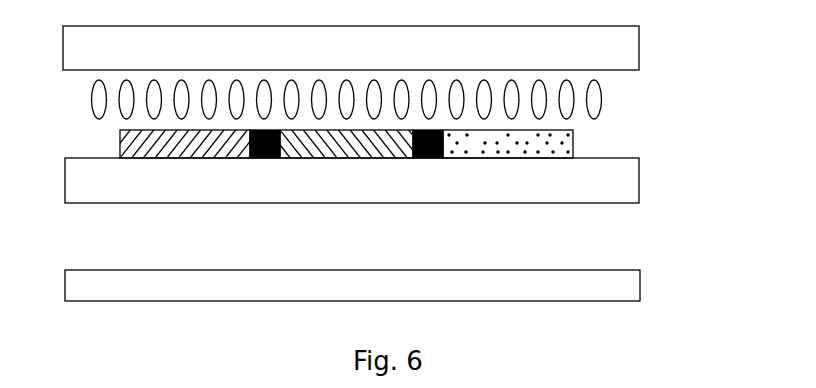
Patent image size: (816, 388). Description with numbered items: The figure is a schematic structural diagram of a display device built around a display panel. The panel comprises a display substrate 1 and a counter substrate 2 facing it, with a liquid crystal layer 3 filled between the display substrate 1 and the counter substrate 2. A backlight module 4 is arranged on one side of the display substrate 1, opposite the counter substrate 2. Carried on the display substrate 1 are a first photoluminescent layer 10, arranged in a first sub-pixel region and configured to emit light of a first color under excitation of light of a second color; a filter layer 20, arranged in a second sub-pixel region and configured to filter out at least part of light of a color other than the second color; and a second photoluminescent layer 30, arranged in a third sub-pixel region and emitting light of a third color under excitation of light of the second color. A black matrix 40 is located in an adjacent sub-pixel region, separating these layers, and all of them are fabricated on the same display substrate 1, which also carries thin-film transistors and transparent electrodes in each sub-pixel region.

The display substrate 1 is at (640, 123).
The counter substrate 2 is at (600, 44).
The liquid crystal layer 3 is at (602, 98).
The backlight module 4 is at (600, 284).
The first photoluminescent layer 10 is at (200, 145).
The filter layer 20 is at (488, 158).
The second photoluminescent layer 30 is at (352, 145).
The black matrix 40 is at (262, 158).